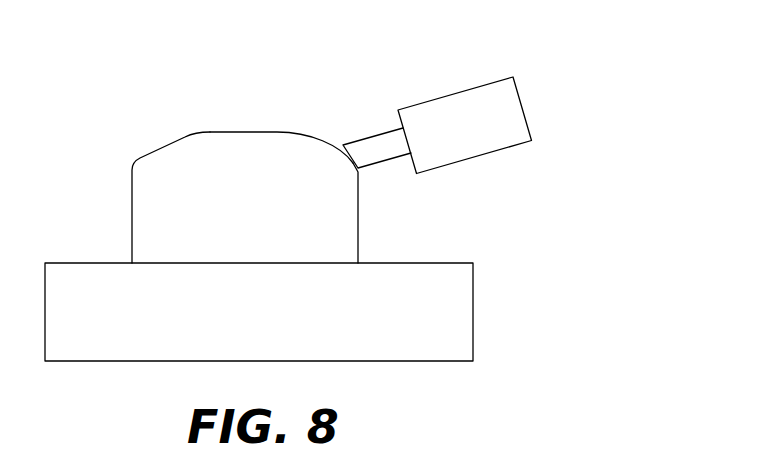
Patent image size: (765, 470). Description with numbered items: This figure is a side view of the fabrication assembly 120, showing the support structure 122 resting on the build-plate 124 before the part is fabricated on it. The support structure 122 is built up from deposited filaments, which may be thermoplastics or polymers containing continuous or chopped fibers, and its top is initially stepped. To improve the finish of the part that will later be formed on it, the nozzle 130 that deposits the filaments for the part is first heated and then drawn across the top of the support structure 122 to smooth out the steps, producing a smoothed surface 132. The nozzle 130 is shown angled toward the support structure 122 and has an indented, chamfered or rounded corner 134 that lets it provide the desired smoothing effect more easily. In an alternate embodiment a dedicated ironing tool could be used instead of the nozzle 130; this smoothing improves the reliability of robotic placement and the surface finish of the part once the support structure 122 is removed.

The fabrication assembly 120 is at (102, 115).
The support structure 122 is at (145, 217).
The build-plate 124 is at (457, 326).
The nozzle 130 is at (462, 112).
The smoothed surface 132 is at (245, 132).
The rounded corner 134 is at (350, 171).